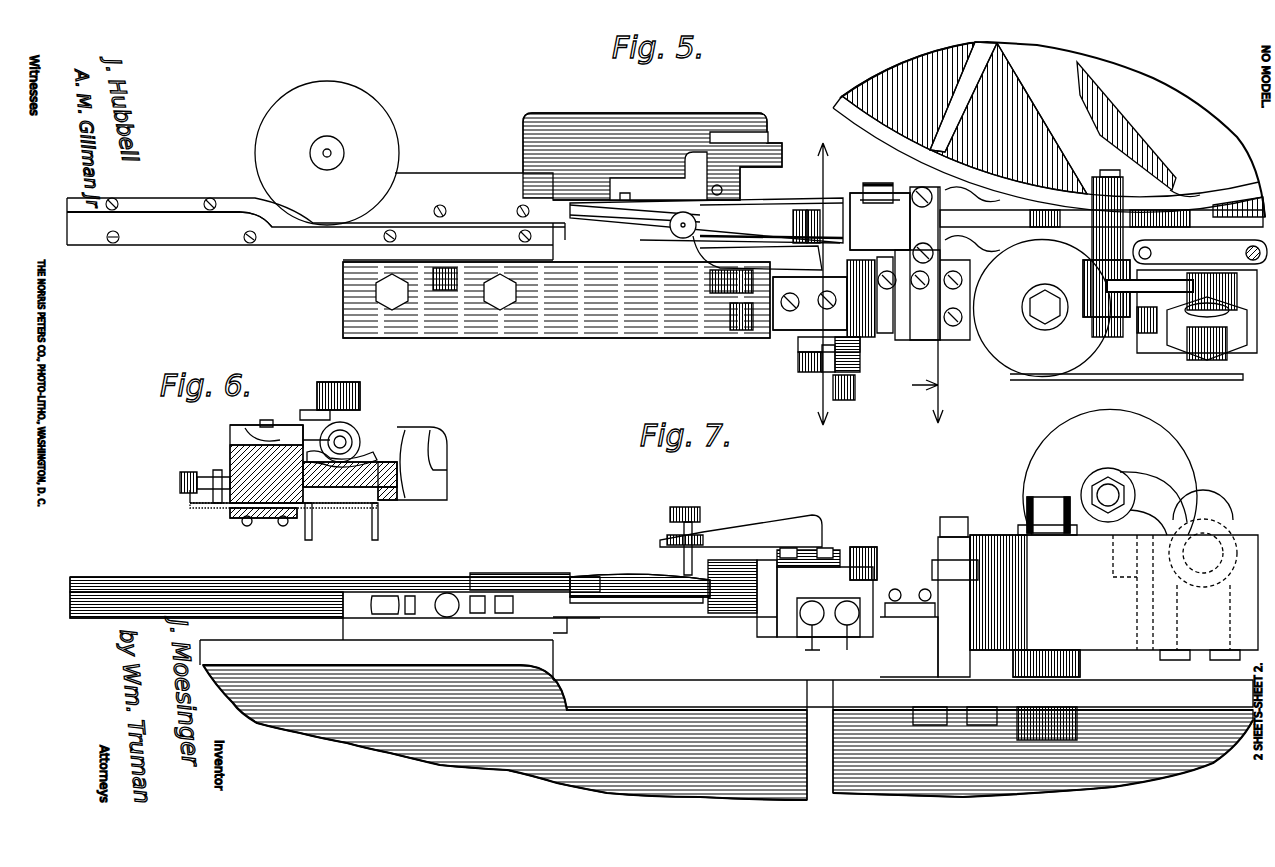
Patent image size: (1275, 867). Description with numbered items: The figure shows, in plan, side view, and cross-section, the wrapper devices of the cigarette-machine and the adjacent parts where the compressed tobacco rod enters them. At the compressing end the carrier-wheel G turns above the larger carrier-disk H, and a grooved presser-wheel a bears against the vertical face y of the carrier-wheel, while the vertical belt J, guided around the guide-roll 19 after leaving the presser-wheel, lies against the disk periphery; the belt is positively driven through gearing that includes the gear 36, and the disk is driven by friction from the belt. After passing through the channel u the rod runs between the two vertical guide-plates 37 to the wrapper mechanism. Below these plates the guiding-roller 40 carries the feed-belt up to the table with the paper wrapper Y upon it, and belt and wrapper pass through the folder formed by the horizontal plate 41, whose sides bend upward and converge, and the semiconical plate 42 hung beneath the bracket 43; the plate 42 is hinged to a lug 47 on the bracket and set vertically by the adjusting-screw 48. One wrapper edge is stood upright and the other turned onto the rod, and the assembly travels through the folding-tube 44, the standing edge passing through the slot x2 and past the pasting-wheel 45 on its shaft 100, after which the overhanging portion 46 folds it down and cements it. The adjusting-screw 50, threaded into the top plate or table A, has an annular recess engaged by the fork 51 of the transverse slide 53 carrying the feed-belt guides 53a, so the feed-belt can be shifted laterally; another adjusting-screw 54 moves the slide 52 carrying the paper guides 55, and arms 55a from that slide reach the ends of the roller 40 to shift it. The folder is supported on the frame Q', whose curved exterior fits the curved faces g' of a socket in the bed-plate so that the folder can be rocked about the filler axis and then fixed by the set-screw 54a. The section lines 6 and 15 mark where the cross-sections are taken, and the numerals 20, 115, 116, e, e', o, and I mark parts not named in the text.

In FIG. 5, the section line 15 is at (931, 317).
In FIG. 5, the section line 6 is at (822, 283).
In FIG. 5, the guide-roll 19 is at (1126, 359).
In FIG. 7, the guide-roll 19 is at (1090, 650).
In FIG. 5, the post 20 is at (970, 205).
In FIG. 7, the post 20 is at (958, 548).
In FIG. 5, the gear 36 is at (868, 190).
In FIG. 5, the vertical guide-plates 37 is at (880, 221).
In FIG. 7, the vertical guide-plates 37 is at (880, 548).
In FIG. 5, the guiding-roller 40 is at (883, 262).
In FIG. 7, the guiding-roller 40 is at (920, 640).
In FIG. 5, the horizontal plate 41 is at (660, 200).
In FIG. 6, the horizontal plate 41 is at (380, 452).
In FIG. 7, the horizontal plate 41 is at (535, 567).
In FIG. 5, the semiconical plate 42 is at (767, 223).
In FIG. 6, the semiconical plate 42 is at (350, 428).
In FIG. 7, the semiconical plate 42 is at (655, 578).
In FIG. 5, the bracket 43 is at (757, 264).
In FIG. 6, the bracket 43 is at (320, 388).
In FIG. 7, the bracket 43 is at (765, 527).
In FIG. 5, the folding-tube 44 is at (316, 216).
In FIG. 7, the folding-tube 44 is at (335, 580).
In FIG. 5, the pasting-wheel 45 is at (398, 152).
In FIG. 5, the overhanging portion 46 is at (205, 212).
In FIG. 5, the lug 47 is at (791, 223).
In FIG. 6, the lug 47 is at (355, 386).
In FIG. 5, the adjusting-screw 48 is at (688, 238).
In FIG. 7, the adjusting-screw 48 is at (690, 508).
In FIG. 5, the adjusting-screw 50 is at (800, 372).
In FIG. 6, the adjusting-screw 50 is at (180, 484).
In FIG. 7, the adjusting-screw 50 is at (812, 626).
In FIG. 5, the fork 51 is at (805, 355).
In FIG. 6, the fork 51 is at (216, 470).
In FIG. 7, the fork 51 is at (800, 626).
In FIG. 5, the slide 52 is at (860, 368).
In FIG. 6, the slide 52 is at (272, 520).
In FIG. 7, the slide 52 is at (845, 619).
In FIG. 5, the slide 53 is at (862, 346).
In FIG. 6, the slide 53 is at (225, 510).
In FIG. 7, the slide 53 is at (832, 612).
In FIG. 6, the feed-belt guides 53a is at (378, 508).
In FIG. 5, the adjusting-screw 54 is at (850, 400).
In FIG. 7, the adjusting-screw 54 is at (848, 642).
In FIG. 5, the set-screw 54a is at (737, 330).
In FIG. 6, the guides 55 is at (358, 510).
In FIG. 5, the arms 55a is at (880, 300).
In FIG. 7, the arms 55a is at (912, 610).
In FIG. 5, the shaft 100 is at (330, 150).
In FIG. 5, the link 115 is at (1200, 252).
In FIG. 5, the link pin 116 is at (1236, 253).
In FIG. 7, the top plate or table A is at (567, 775).
In FIG. 5, the carrier-wheel G is at (838, 108).
In FIG. 5, the carrier-disk H is at (1240, 192).
In FIG. 5, the vertical belt J is at (985, 318).
In FIG. 7, the vertical belt J is at (1114, 589).
In FIG. 7, the wrapper Y is at (922, 665).
In FIG. 5, the presser-wheel a is at (1092, 205).
In FIG. 7, the presser-wheel a is at (1125, 472).
In FIG. 5, the slide e is at (556, 314).
In FIG. 7, the slide block e' is at (560, 648).
In FIG. 6, the curved faces g' is at (354, 448).
In FIG. 5, the pin o is at (716, 193).
In FIG. 6, the pin o is at (369, 423).
In FIG. 5, the channel u is at (1101, 220).
In FIG. 5, the slot x2 is at (352, 248).
In FIG. 5, the vertical face y is at (1182, 186).
In FIG. 5, the frame Q' is at (810, 303).
In FIG. 6, the frame Q' is at (297, 454).
In FIG. 7, the lug I is at (903, 660).